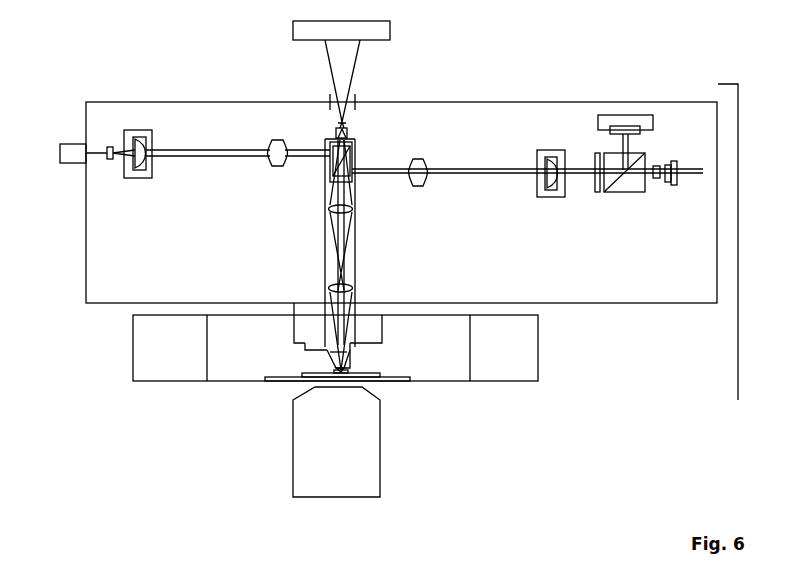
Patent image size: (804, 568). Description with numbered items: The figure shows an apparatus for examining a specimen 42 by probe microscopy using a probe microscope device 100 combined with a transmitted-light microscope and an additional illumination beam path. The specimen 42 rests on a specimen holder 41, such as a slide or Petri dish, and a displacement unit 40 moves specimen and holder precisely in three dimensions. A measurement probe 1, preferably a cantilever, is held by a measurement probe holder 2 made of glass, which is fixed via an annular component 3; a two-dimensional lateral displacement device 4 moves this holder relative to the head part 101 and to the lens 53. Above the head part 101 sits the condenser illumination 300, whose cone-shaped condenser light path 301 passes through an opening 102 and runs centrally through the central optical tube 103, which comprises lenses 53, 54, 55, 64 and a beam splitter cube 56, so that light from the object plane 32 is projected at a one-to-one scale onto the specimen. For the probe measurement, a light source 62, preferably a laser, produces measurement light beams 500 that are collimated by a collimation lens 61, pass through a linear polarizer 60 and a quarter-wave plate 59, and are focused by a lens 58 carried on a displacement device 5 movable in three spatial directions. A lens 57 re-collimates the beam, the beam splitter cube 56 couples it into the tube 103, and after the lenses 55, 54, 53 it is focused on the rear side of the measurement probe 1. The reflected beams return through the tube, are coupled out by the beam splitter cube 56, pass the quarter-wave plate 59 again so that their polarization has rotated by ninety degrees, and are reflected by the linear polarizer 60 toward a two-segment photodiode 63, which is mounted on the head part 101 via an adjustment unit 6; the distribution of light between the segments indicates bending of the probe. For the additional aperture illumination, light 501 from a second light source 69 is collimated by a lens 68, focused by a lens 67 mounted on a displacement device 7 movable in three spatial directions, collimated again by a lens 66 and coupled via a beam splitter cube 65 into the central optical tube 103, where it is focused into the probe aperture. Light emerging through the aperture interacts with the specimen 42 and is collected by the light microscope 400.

The measurement probe 1 is at (334, 368).
The measurement probe holder 2 is at (348, 367).
The annular component 3 is at (355, 345).
The lateral displacement device 4 is at (300, 330).
The displacement device 5 is at (540, 150).
The adjustment unit 6 is at (653, 121).
The displacement device 7 is at (150, 136).
The object plane 32 is at (338, 121).
The displacement unit 40 is at (530, 366).
The specimen holder 41 is at (410, 378).
The specimen 42 is at (405, 362).
The lens 53 is at (345, 348).
The lens 54 is at (353, 288).
The lens 55 is at (353, 209).
The beam splitter cube 56 is at (350, 165).
The lens 57 is at (420, 158).
The lens 58 is at (552, 185).
The λ/4 plate 59 is at (597, 192).
The linear polarizer 60 is at (624, 192).
The collimation lens 61 is at (658, 180).
The light source 62 is at (675, 165).
The photodiode 63 is at (623, 128).
The optical lens 64 is at (348, 136).
The beam splitter cube 65 is at (330, 158).
The lens 66 is at (272, 163).
The lens 67 is at (140, 172).
The lens 68 is at (111, 147).
The second light source 69 is at (72, 158).
The probe microscope device 100 is at (738, 357).
The head part 101 is at (717, 125).
The opening 102 is at (328, 100).
The central optical tube 103 is at (357, 248).
The condenser illumination 300 is at (374, 36).
The condenser light path 301 is at (354, 73).
The light microscope 400 is at (388, 470).
The measurement light beams 500 is at (484, 176).
The light 501 is at (190, 158).